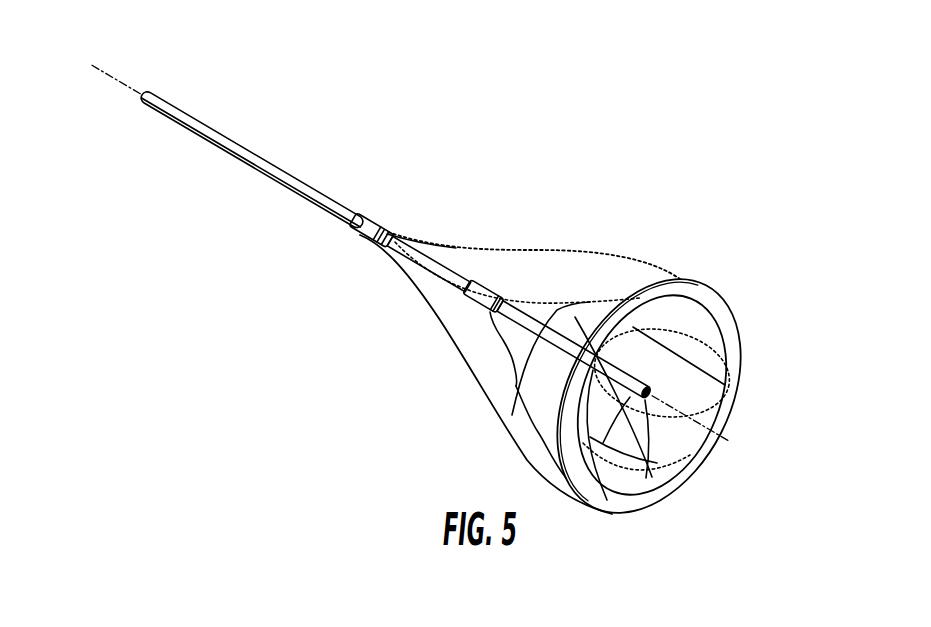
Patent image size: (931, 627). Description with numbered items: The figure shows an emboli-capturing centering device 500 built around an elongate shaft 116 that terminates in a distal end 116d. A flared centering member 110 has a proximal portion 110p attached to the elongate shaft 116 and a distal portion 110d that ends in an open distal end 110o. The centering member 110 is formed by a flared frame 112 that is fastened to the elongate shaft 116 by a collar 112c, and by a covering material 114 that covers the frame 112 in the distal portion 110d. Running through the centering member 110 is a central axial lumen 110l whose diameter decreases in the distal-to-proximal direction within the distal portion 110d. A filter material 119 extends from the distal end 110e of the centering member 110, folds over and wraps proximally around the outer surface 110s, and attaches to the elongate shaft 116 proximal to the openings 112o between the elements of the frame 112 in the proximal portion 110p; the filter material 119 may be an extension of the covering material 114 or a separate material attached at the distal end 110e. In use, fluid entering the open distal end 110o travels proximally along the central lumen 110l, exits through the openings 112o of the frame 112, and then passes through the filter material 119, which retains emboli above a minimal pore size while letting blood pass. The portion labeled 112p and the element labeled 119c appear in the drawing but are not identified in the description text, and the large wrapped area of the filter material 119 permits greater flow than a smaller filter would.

The emboli-capturing centering device 500 is at (710, 156).
The centering member 110 is at (515, 373).
The proximal portion 110p is at (498, 342).
The distal portion 110d is at (533, 420).
The outer surface 110s is at (590, 303).
The open distal end 110o is at (668, 462).
The central axial lumen 110l is at (600, 400).
The distal end 110e is at (735, 380).
The flared frame 112 is at (543, 303).
The collar 112c is at (490, 282).
The openings 112o is at (533, 303).
The mesh portion 112p is at (695, 360).
The covering material 114 is at (603, 327).
The elongate shaft 116 is at (283, 172).
The distal end 116d is at (660, 398).
The filter material 119 is at (685, 278).
The ring coupler 119c is at (381, 228).